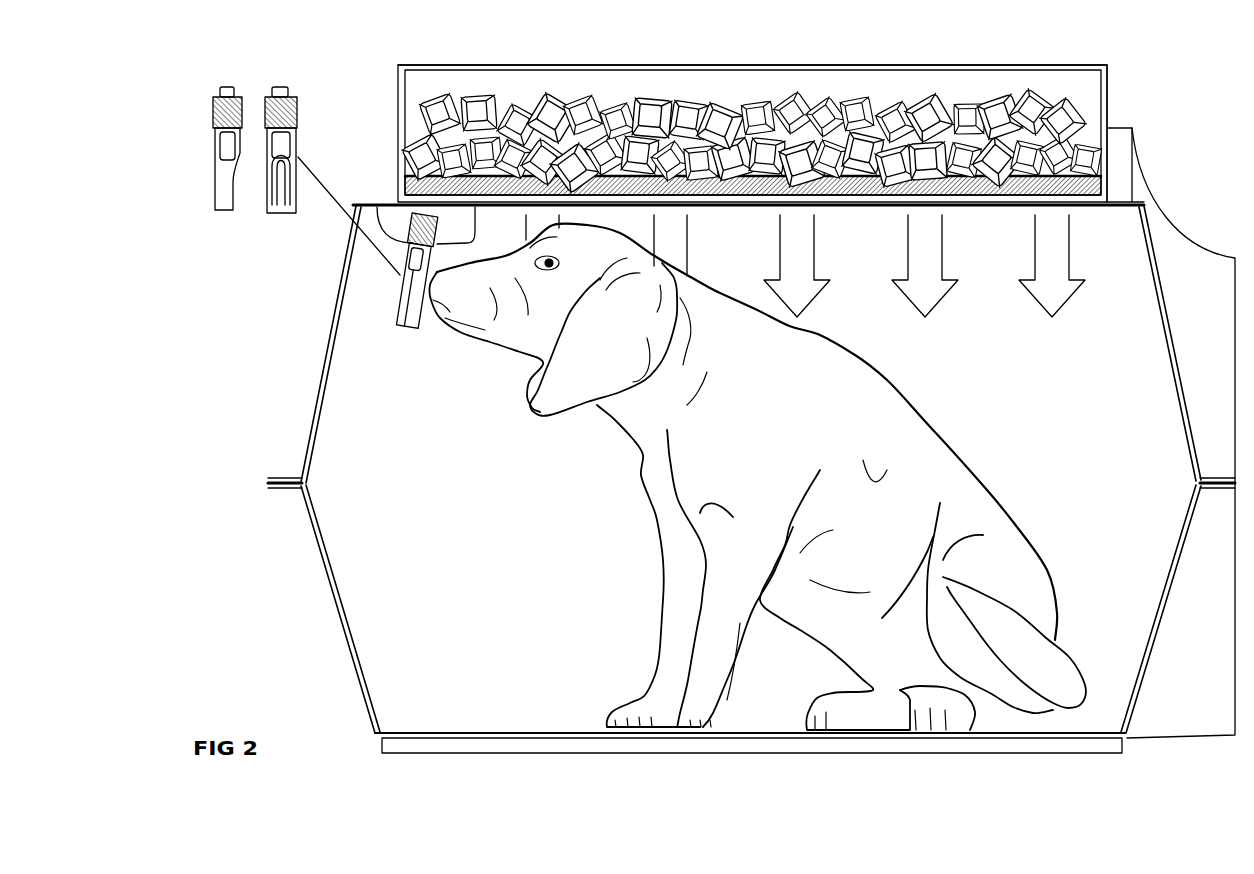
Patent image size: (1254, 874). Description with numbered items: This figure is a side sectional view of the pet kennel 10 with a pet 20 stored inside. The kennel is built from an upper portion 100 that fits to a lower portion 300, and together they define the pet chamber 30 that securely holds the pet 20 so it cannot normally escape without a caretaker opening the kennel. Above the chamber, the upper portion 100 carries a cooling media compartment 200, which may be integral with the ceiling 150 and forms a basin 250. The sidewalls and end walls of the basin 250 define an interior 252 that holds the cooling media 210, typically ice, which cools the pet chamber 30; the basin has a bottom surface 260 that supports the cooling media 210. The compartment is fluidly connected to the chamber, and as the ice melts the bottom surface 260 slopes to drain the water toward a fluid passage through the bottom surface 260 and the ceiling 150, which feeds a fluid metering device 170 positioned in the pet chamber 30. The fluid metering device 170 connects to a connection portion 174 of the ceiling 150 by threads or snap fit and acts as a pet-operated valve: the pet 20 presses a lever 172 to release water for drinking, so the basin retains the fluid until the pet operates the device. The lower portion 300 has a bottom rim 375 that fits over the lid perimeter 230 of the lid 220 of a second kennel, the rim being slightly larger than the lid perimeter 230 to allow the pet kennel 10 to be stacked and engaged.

The pet kennel 10 is at (587, 30).
The pet 20 is at (640, 420).
The pet chamber 30 is at (382, 563).
The upper portion 100 is at (315, 395).
The ceiling 150 is at (1078, 208).
The fluid metering device 170 is at (280, 85).
The lever 172 is at (281, 207).
The connection portion 174 is at (385, 217).
The cooling media compartment 200 is at (1107, 117).
The cooling media 210 is at (428, 132).
The lid 220 is at (1075, 63).
The lid perimeter 230 is at (1110, 81).
The basin 250 is at (1107, 147).
The interior 252 is at (543, 90).
The bottom surface 260 is at (799, 203).
The lower portion 300 is at (343, 643).
The bottom rim 375 is at (382, 748).